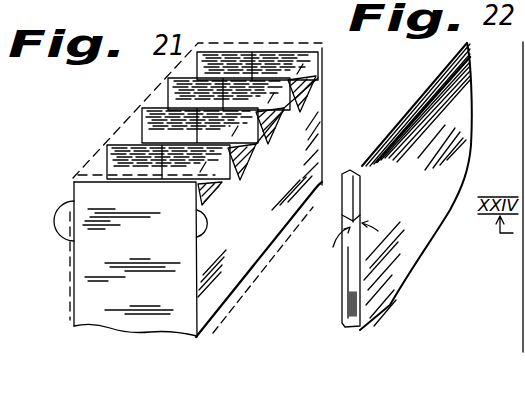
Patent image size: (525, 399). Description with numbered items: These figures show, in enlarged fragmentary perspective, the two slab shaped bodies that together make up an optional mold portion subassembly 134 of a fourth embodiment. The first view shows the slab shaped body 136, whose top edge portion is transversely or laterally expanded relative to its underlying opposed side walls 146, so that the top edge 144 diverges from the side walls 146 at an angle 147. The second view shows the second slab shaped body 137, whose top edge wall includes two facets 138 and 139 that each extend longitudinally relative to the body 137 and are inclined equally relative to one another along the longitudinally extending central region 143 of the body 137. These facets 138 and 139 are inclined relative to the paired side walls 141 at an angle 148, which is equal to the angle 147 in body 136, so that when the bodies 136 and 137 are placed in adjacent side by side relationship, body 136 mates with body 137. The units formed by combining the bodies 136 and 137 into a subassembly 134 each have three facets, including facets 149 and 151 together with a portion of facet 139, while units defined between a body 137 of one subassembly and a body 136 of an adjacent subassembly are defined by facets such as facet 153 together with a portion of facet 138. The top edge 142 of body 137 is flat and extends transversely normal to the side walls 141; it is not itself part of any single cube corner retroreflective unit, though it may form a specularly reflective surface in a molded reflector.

In FIG. 21, the subassembly 134 is at (393, 346).
In FIG. 21, the slab shaped body 136 is at (254, 246).
In FIG. 22, the slab shaped body 137 is at (431, 208).
In FIG. 22, the facet 138 is at (371, 228).
In FIG. 22, the facet 139 is at (344, 168).
In FIG. 22, the side walls 141 is at (399, 184).
In FIG. 22, the top edge 142 is at (447, 58).
In FIG. 22, the longitudinally extending central region 143 is at (466, 38).
In FIG. 21, the top edge 144 is at (221, 91).
In FIG. 21, the side walls 146 is at (324, 123).
In FIG. 21, the angle 147 is at (57, 232).
In FIG. 22, the angle 148 is at (355, 239).
In FIG. 21, the facet 149 is at (325, 84).
In FIG. 21, the facet 151 is at (256, 137).
In FIG. 21, the facet 153 is at (142, 119).